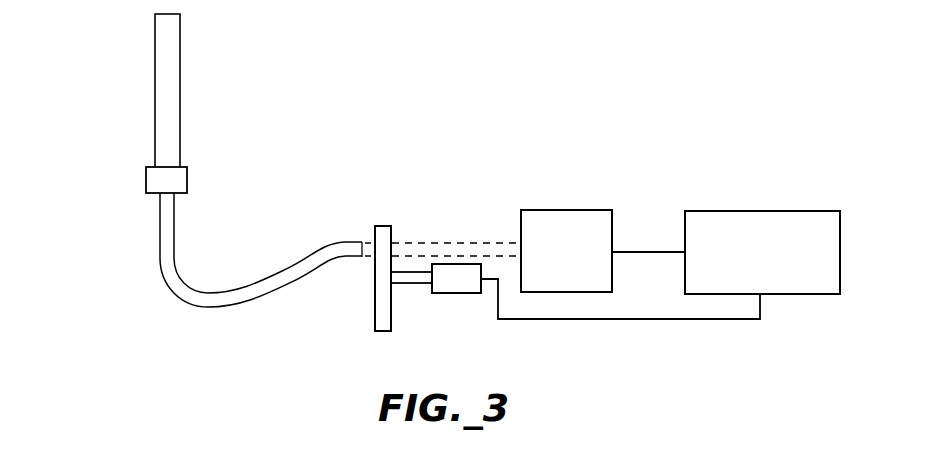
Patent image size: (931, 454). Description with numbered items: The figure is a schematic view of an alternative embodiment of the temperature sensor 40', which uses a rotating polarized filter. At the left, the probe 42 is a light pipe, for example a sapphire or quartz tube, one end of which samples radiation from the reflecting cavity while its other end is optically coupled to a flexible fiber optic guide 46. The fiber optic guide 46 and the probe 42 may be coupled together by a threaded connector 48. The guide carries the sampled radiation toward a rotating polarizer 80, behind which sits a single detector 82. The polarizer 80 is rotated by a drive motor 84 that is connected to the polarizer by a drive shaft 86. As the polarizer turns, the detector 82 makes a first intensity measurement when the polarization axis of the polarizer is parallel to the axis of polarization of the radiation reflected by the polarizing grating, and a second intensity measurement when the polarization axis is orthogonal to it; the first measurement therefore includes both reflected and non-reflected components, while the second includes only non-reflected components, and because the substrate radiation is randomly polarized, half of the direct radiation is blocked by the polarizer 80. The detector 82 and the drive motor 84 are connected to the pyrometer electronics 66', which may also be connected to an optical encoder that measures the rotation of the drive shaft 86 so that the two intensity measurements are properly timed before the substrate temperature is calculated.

The temperature sensor 40' is at (77, 283).
The probe 42 is at (180, 113).
The flexible fiber optic guide 46 is at (192, 307).
The threaded connector 48 is at (187, 178).
The rotating polarizer 80 is at (375, 291).
The detector 82 is at (603, 251).
The drive motor 84 is at (464, 293).
The drive shaft 86 is at (413, 284).
The pyrometer electronics 66' is at (762, 252).